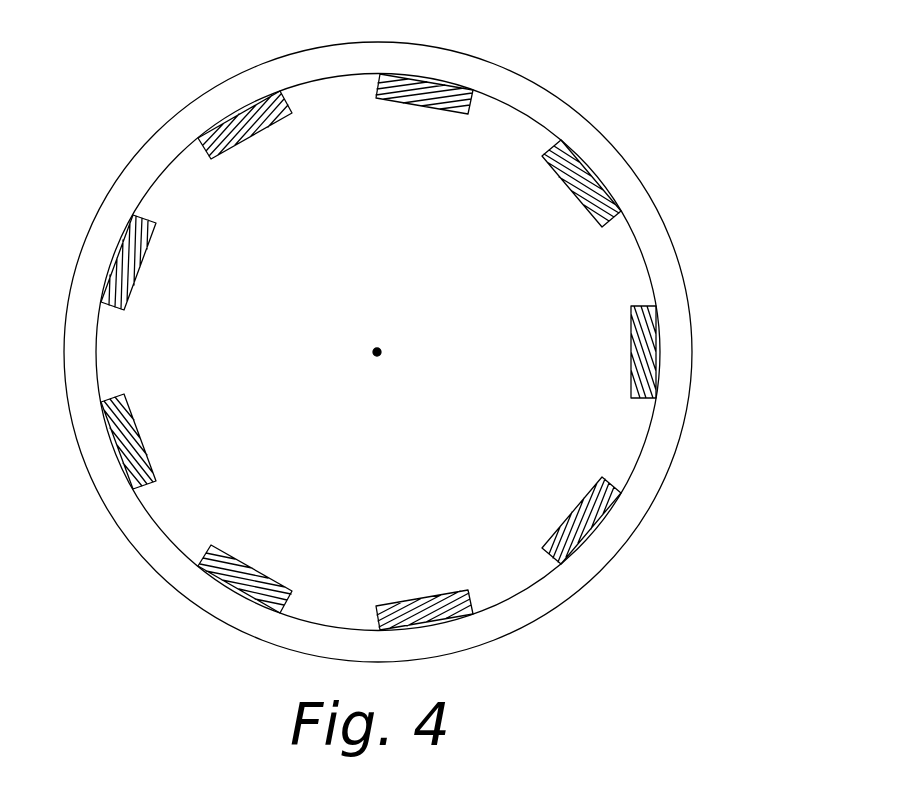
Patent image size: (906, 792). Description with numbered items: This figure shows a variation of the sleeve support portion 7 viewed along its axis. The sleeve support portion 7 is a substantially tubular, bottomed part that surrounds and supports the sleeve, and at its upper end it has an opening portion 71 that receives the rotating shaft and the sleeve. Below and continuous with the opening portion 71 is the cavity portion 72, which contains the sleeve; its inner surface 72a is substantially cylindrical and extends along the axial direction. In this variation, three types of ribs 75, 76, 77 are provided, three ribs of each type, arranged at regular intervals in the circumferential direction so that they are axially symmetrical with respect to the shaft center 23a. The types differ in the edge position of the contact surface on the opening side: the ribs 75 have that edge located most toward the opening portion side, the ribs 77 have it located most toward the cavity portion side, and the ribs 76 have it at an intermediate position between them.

The sleeve support portion 7 is at (46, 31).
The opening portion 71 is at (538, 108).
The cavity portion 72 is at (136, 155).
The inner surface 72a is at (651, 270).
The ribs 75 is at (630, 354).
The ribs 76 is at (421, 597).
The ribs 77 is at (572, 500).
The shaft center 23a is at (381, 353).